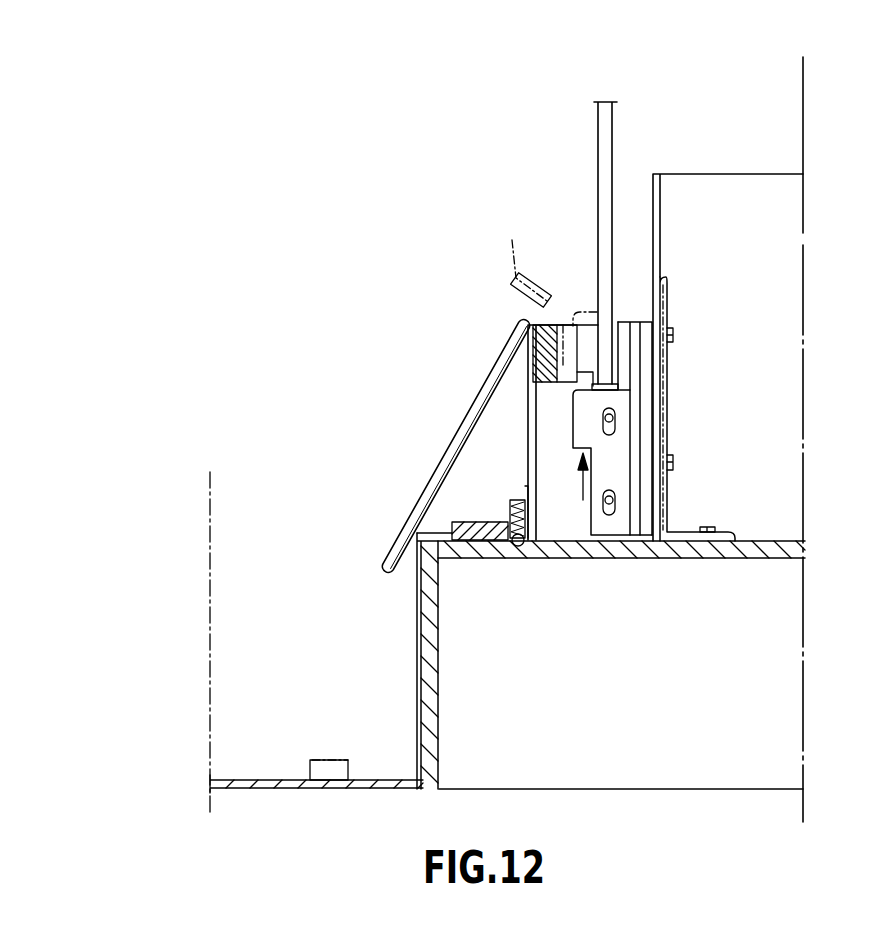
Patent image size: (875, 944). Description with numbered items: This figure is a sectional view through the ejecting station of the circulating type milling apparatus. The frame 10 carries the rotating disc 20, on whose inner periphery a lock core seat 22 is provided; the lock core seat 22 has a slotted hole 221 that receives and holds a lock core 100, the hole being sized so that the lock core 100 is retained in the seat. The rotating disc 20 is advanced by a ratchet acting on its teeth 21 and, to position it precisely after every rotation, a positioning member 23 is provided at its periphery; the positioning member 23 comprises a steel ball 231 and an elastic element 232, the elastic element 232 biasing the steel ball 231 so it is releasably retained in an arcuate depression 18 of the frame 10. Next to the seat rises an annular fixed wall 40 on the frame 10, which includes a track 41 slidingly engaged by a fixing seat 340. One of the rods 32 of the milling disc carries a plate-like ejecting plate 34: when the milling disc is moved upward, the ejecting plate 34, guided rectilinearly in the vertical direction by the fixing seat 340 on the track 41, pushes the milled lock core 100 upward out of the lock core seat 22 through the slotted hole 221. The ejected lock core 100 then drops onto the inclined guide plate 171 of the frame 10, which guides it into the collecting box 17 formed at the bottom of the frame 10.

The frame 10 is at (438, 638).
The collecting box 17 is at (377, 789).
The guide plate 171 is at (472, 408).
The rotating disc 20 is at (528, 420).
The tooth 21 is at (450, 527).
The lock core seat 22 is at (528, 330).
The slotted hole 221 is at (562, 325).
The positioning member 23 is at (507, 500).
The steel ball 231 is at (567, 599).
The arcuate depression 18 is at (520, 548).
The elastic element 232 is at (508, 514).
The rod 32 is at (612, 147).
The ejecting plate 34 is at (605, 527).
The fixing seat 340 is at (667, 292).
The annular fixed wall 40 is at (660, 197).
The track 41 is at (643, 373).
The lock core 100 is at (512, 240).